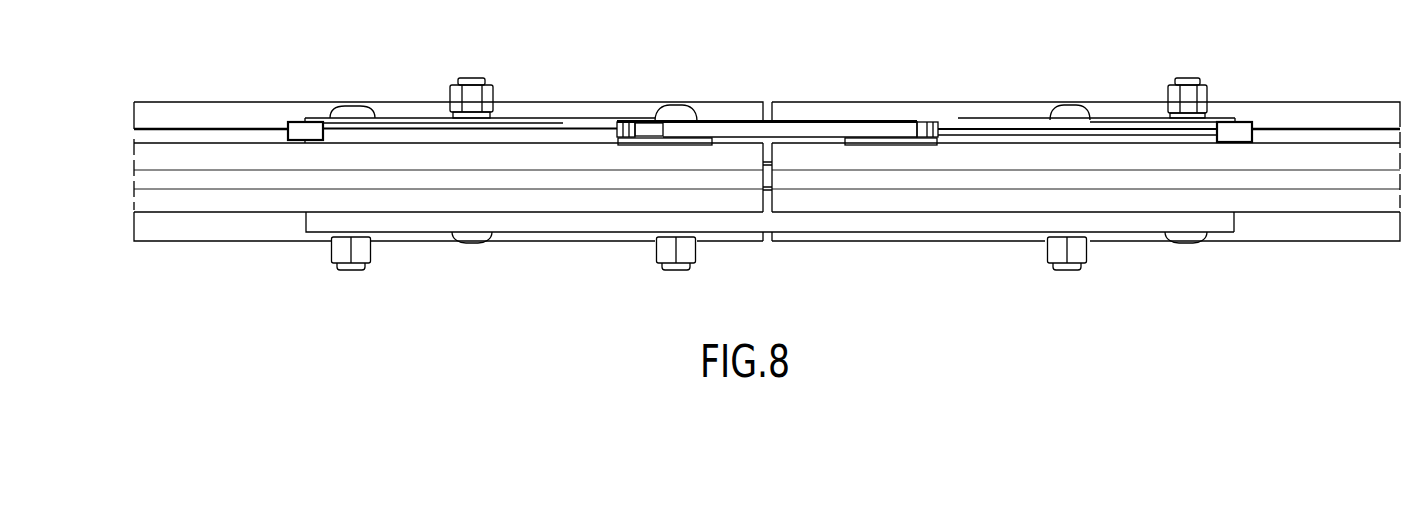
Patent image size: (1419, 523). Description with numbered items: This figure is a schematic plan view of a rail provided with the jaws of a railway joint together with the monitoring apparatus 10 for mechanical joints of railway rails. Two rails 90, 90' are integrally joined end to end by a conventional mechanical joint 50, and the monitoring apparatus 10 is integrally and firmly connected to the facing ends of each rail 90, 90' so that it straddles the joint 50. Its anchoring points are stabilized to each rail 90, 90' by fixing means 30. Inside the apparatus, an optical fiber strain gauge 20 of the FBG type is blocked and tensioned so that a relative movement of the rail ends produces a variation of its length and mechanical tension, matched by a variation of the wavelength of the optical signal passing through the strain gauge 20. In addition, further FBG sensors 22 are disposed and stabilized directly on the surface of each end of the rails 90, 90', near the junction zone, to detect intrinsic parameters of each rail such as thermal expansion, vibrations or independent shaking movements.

The monitoring apparatus 10 is at (806, 96).
The optical fiber strain gauge 20 is at (562, 128).
The further FBG sensors 22 is at (297, 123).
The fixing means 30 is at (617, 137).
The mechanical joint 50 is at (1058, 90).
The rail 90 is at (450, 139).
The rail 90' is at (1083, 146).